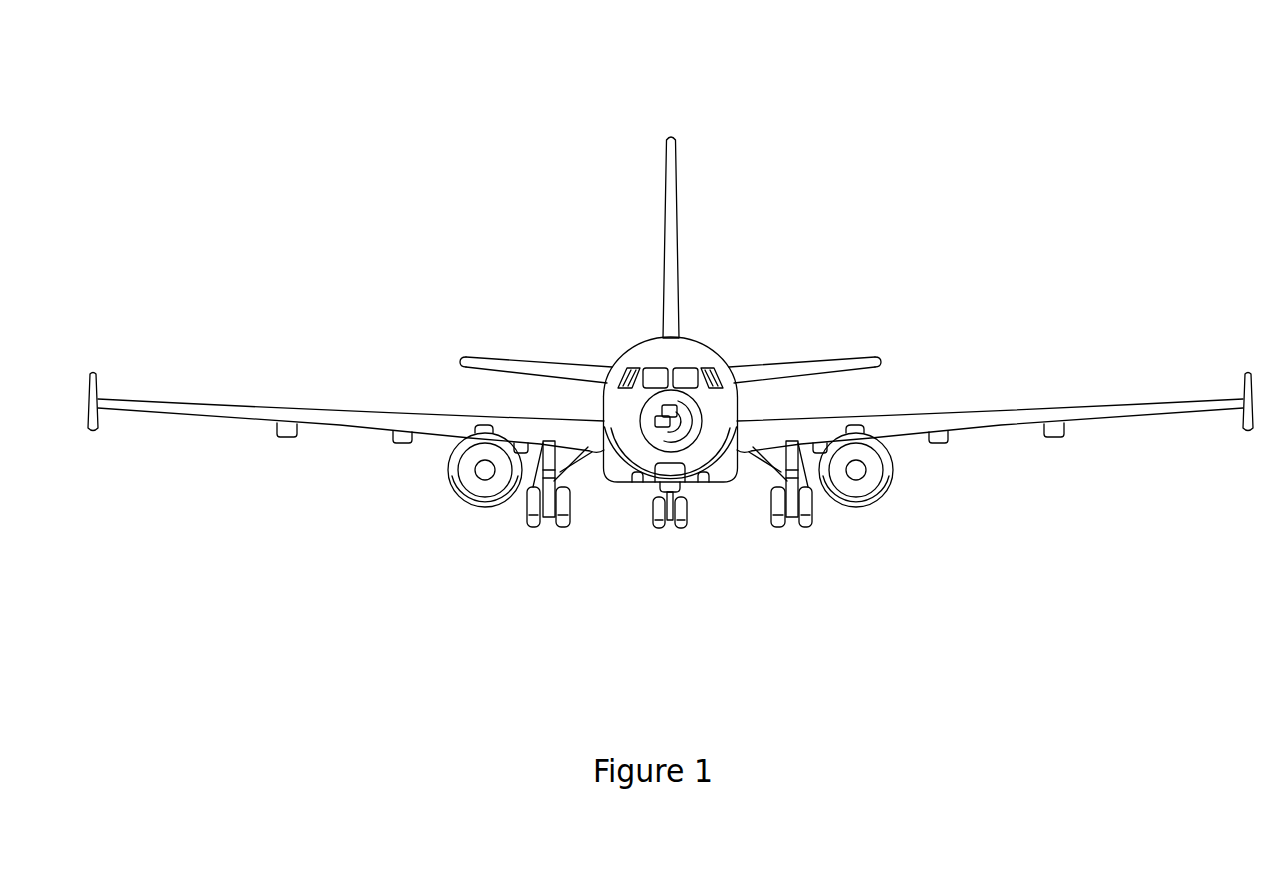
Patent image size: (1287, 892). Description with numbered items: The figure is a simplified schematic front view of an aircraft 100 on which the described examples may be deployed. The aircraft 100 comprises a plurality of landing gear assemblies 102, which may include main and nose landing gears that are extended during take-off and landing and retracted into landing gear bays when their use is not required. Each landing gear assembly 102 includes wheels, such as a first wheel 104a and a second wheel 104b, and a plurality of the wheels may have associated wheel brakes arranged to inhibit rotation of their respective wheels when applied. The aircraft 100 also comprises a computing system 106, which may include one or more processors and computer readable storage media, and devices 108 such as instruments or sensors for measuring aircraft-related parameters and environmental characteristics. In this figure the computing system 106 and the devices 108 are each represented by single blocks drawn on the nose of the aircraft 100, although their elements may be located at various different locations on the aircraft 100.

The aircraft 100 is at (670, 324).
The landing gear assemblies 102 is at (628, 517).
The first wheel 104a is at (530, 508).
The second wheel 104b is at (563, 518).
The computing system 106 is at (675, 408).
The devices 108 is at (660, 420).